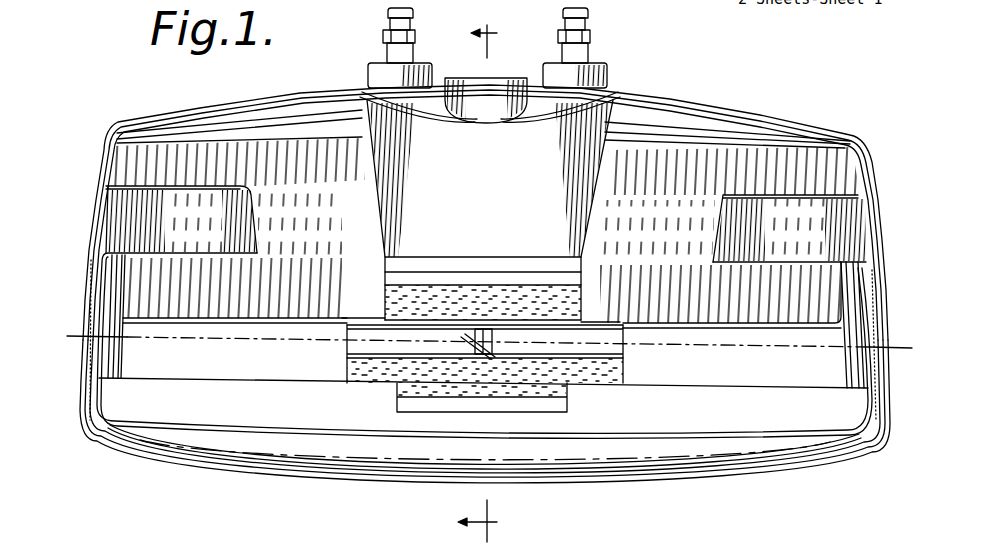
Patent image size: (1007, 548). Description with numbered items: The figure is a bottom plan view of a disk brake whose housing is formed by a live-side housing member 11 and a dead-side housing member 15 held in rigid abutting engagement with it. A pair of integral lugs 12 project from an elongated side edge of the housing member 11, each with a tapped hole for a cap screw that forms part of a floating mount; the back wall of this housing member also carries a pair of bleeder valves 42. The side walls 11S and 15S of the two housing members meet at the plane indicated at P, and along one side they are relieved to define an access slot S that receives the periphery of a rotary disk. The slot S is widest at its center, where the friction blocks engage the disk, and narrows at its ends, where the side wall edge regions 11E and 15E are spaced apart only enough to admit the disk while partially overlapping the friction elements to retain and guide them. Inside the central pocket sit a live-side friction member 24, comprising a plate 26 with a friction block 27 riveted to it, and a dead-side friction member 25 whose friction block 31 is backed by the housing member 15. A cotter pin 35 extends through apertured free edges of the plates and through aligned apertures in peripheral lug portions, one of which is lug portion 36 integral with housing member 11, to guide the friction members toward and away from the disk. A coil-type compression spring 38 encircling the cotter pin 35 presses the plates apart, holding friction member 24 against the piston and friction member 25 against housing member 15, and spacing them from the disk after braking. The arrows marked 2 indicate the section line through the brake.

The live-side housing member 11 is at (667, 96).
The side wall 11S is at (85, 273).
The side wall edge region 11E is at (194, 317).
The integral lugs 12 is at (232, 230).
The dead-side housing member 15 is at (634, 490).
The side wall 15S is at (83, 420).
The side wall edge region 15E is at (205, 373).
The live-side friction member 24 is at (380, 304).
The dead-side friction member 25 is at (630, 372).
The plate 26 is at (537, 280).
The friction block 27 is at (410, 300).
The friction block 31 is at (452, 385).
The cotter pin 35 is at (492, 337).
The peripheral lug portion 36 is at (493, 245).
The coil-type compression spring 38 is at (472, 335).
The bleeder valves 42 is at (415, 33).
The plane P is at (110, 330).
The access slot S is at (648, 331).
The section line 2- 2 is at (489, 283).